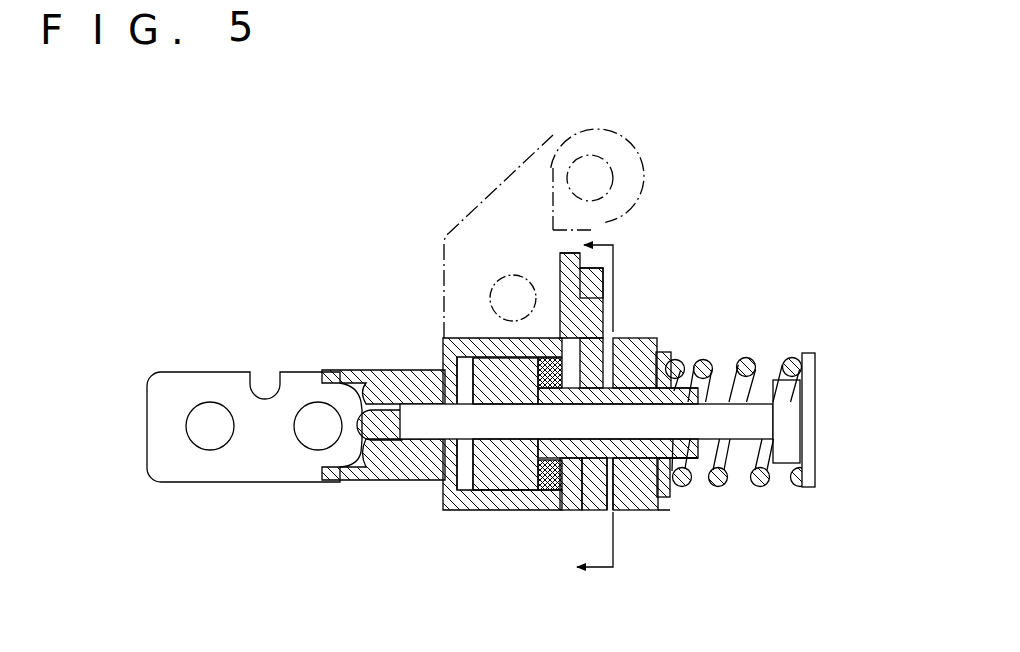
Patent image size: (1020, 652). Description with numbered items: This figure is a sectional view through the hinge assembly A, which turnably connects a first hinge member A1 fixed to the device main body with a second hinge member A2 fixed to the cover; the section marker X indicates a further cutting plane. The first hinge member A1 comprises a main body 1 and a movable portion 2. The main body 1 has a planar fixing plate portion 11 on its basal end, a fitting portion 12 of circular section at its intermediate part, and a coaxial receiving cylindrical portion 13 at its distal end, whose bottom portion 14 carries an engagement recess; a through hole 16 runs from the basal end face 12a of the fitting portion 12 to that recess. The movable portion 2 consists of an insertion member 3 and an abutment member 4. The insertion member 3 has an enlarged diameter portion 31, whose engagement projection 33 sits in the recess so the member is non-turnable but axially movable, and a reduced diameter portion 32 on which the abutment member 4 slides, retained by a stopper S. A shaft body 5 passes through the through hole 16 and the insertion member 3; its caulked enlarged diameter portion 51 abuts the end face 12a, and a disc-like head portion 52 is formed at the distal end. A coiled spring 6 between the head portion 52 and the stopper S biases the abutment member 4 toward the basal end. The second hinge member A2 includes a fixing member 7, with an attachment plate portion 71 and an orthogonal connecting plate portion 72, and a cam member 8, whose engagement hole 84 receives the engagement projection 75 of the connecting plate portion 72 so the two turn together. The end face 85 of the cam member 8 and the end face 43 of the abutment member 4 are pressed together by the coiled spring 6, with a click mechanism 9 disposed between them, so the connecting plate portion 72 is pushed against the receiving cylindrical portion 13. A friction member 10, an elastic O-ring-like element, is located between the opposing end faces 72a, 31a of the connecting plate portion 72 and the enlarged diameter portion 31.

The hinge assembly A is at (397, 218).
The first hinge member A1 is at (247, 489).
The second hinge member A2 is at (563, 243).
The main body 1 is at (389, 388).
The movable portion 2 is at (733, 330).
The insertion member 3 is at (720, 392).
The abutment member 4 is at (686, 378).
The shaft body 5 is at (728, 400).
The coiled spring 6 is at (755, 363).
The fixing member 7 is at (567, 328).
The cam member 8 is at (630, 510).
The click mechanism 9 is at (614, 515).
The friction member 10 is at (588, 486).
The fixing plate portion 11 is at (254, 443).
The fitting portion 12 is at (375, 426).
The end face 12a is at (357, 398).
The receiving cylindrical portion 13 is at (481, 466).
The bottom portion 14 is at (463, 512).
The through hole 16 is at (421, 430).
The enlarged diameter portion 31 is at (480, 212).
The end face 31a is at (530, 340).
The reduced diameter portion 32 is at (647, 338).
The engagement projection 33 is at (471, 348).
The end face 43 is at (590, 510).
The enlarged diameter portion 51 is at (370, 432).
The head portion 52 is at (816, 412).
The attachment plate portion 71 is at (543, 338).
The connecting plate portion 72 is at (570, 510).
The end face 72a is at (553, 337).
The engagement projection 75 is at (603, 306).
The engagement hole 84 is at (596, 333).
The end face 85 is at (657, 513).
The stopper S is at (665, 510).
The section line X is at (606, 416).